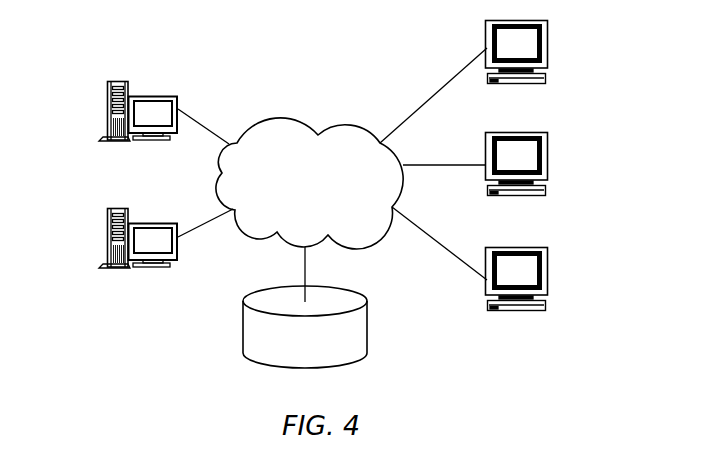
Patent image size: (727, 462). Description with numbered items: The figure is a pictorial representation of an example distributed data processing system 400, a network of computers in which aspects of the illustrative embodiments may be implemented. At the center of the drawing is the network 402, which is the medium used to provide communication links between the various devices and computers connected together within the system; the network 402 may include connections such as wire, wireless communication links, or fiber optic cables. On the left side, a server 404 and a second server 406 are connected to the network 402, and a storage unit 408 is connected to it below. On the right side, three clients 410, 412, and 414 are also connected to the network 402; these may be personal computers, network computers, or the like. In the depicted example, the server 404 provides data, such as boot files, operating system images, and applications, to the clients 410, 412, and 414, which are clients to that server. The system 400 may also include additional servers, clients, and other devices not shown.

The distributed data processing system 400 is at (378, 55).
The network 402 is at (292, 125).
The server 404 is at (106, 112).
The server 406 is at (106, 241).
The storage unit 408 is at (243, 327).
The client 410 is at (548, 50).
The client 412 is at (548, 165).
The client 414 is at (548, 277).